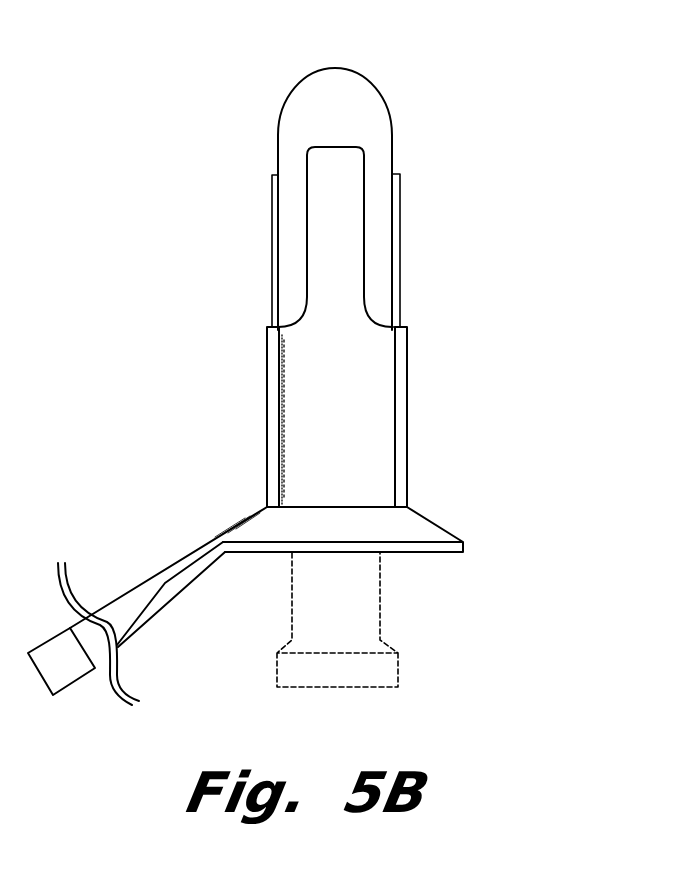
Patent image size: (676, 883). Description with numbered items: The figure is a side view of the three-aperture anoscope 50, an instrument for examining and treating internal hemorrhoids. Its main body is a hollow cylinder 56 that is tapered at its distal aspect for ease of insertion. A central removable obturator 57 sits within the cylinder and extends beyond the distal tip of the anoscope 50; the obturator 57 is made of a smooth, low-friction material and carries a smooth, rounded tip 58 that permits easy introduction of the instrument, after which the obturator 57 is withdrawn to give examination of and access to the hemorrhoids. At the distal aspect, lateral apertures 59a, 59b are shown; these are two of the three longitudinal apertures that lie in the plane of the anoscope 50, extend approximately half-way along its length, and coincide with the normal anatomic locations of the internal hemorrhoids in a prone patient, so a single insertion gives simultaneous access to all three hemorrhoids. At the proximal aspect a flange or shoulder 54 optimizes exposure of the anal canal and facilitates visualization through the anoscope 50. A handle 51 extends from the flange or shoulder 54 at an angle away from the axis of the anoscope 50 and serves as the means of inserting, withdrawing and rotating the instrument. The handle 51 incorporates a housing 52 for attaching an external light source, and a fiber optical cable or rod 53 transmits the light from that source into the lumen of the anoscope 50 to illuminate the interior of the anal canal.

The anoscope 50 is at (525, 429).
The handle 51 is at (158, 633).
The housing 52 is at (58, 670).
The fiber optical cable or rod 53 is at (139, 584).
The flange or shoulder 54 is at (452, 567).
The hollow cylinder 56 is at (248, 428).
The central removable obturator 57 is at (360, 670).
The smooth, rounded tip 58 is at (366, 60).
The lateral aperture 59a is at (293, 204).
The lateral aperture 59b is at (376, 190).